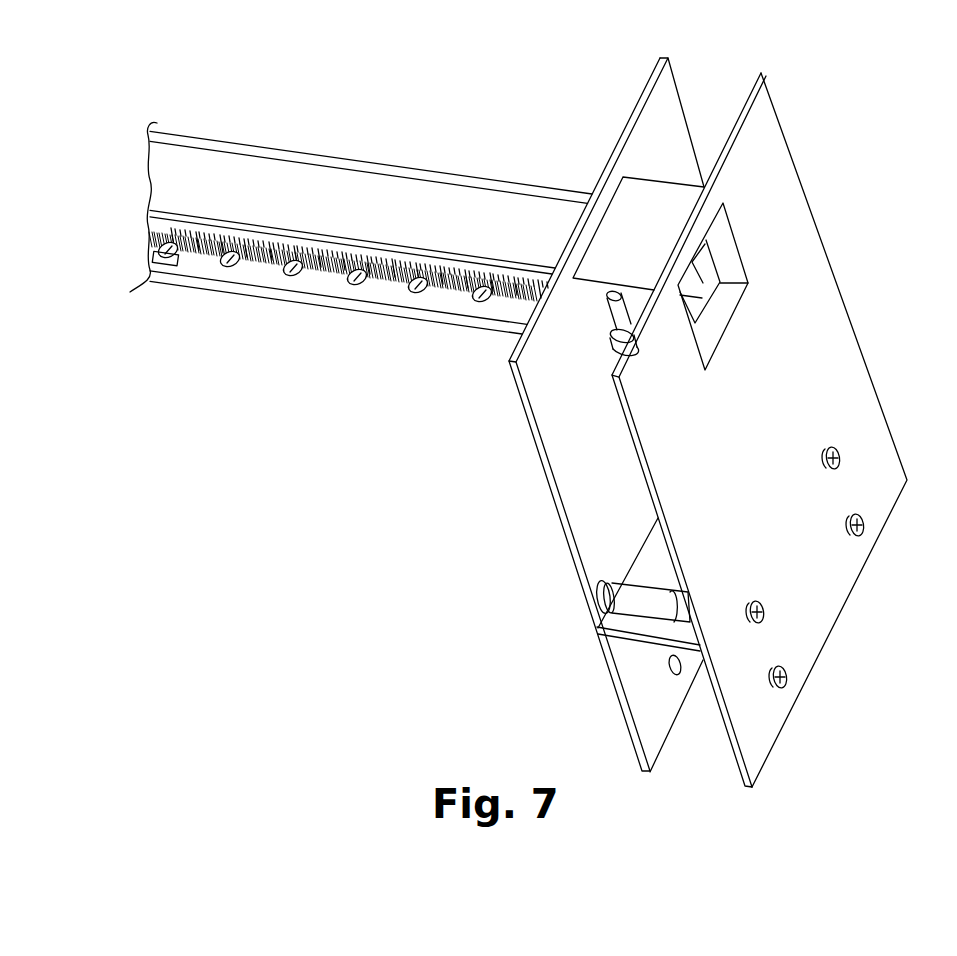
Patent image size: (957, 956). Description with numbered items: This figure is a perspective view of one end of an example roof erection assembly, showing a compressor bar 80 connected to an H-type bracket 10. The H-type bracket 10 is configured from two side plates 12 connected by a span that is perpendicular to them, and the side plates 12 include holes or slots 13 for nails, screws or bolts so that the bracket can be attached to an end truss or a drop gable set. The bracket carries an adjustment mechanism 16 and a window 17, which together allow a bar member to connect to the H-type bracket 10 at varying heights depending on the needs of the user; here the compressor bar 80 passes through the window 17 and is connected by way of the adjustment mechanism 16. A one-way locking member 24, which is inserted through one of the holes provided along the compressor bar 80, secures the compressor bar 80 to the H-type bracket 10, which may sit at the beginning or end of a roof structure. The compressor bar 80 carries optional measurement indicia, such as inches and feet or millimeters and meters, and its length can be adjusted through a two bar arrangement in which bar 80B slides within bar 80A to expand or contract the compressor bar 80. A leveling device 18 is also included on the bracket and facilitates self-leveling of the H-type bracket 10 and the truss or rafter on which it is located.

The H-type bracket 10 is at (822, 336).
The side plates 12 is at (667, 458).
The holes or slots 13 is at (857, 538).
The adjustment mechanism 16 is at (656, 196).
The window 17 is at (745, 260).
The leveling device 18 is at (648, 605).
The one-way locking member 24 is at (618, 314).
The compressor bar 80 is at (323, 285).
The outer bar of two-bar arrangement 80A is at (455, 172).
The inner bar of two-bar arrangement 80B is at (395, 176).